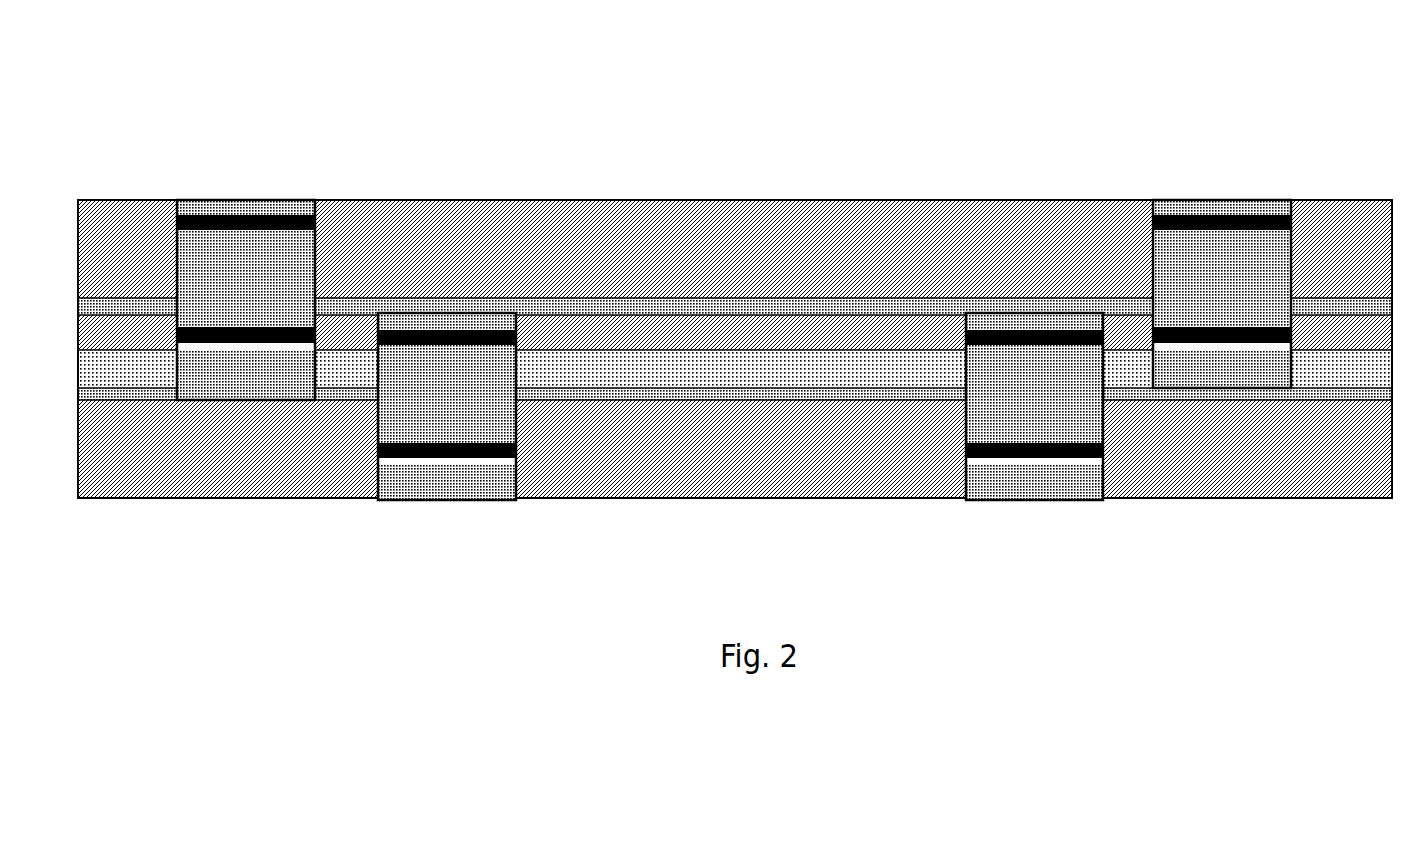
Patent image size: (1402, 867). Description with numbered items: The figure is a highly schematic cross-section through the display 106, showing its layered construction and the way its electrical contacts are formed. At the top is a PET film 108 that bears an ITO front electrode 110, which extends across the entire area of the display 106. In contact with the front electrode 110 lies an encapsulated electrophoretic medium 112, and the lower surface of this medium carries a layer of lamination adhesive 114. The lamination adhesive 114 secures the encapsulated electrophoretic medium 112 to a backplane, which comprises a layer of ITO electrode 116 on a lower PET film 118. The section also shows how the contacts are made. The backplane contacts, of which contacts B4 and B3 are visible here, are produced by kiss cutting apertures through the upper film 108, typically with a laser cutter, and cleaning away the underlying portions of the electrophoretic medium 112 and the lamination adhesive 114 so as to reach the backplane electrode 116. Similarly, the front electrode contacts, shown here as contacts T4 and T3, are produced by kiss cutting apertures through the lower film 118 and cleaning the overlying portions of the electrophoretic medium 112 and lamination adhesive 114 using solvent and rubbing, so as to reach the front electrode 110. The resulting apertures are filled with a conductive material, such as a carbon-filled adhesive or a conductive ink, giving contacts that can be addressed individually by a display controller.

The display 106 is at (615, 185).
The PET film 108 is at (853, 222).
The ITO front electrode 110 is at (914, 302).
The encapsulated electrophoretic medium 112 is at (666, 330).
The lamination adhesive 114 is at (667, 380).
The ITO electrode 116 is at (735, 393).
The PET film 118 is at (892, 450).
The contact B4 is at (265, 223).
The contact B3 is at (1215, 210).
The contact T4 is at (465, 475).
The contact T3 is at (1040, 463).